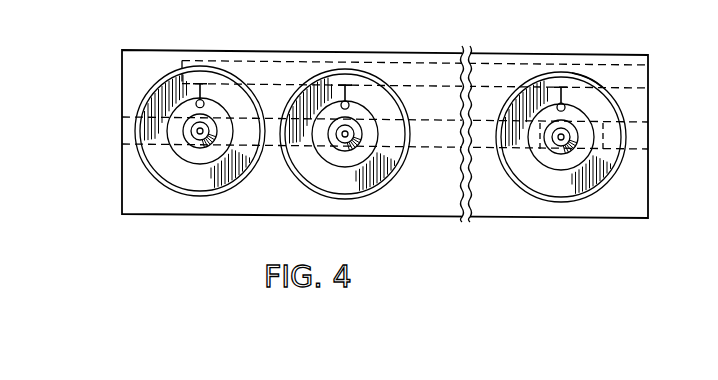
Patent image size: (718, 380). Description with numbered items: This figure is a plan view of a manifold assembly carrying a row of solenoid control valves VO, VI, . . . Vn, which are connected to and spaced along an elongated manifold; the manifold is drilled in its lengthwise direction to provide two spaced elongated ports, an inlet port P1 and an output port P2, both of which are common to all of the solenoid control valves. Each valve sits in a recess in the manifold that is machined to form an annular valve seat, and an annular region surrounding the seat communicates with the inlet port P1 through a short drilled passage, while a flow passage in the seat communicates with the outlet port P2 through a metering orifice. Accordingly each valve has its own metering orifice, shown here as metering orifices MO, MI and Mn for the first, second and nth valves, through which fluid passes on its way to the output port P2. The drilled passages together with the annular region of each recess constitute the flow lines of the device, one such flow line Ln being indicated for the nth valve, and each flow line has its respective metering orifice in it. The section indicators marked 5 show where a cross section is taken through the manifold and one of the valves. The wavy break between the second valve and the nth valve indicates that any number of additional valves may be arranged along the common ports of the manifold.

The solenoid control valve VO is at (200, 66).
The solenoid control valve VI is at (345, 69).
The solenoid control valve Vn is at (527, 83).
The metering orifice MO is at (193, 140).
The metering orifice MI is at (337, 142).
The metering orifice Mn is at (559, 139).
The inlet port P1 is at (648, 78).
The output port P2 is at (122, 132).
The flow line Ln is at (594, 78).
The section line 5- 5 is at (562, 40).